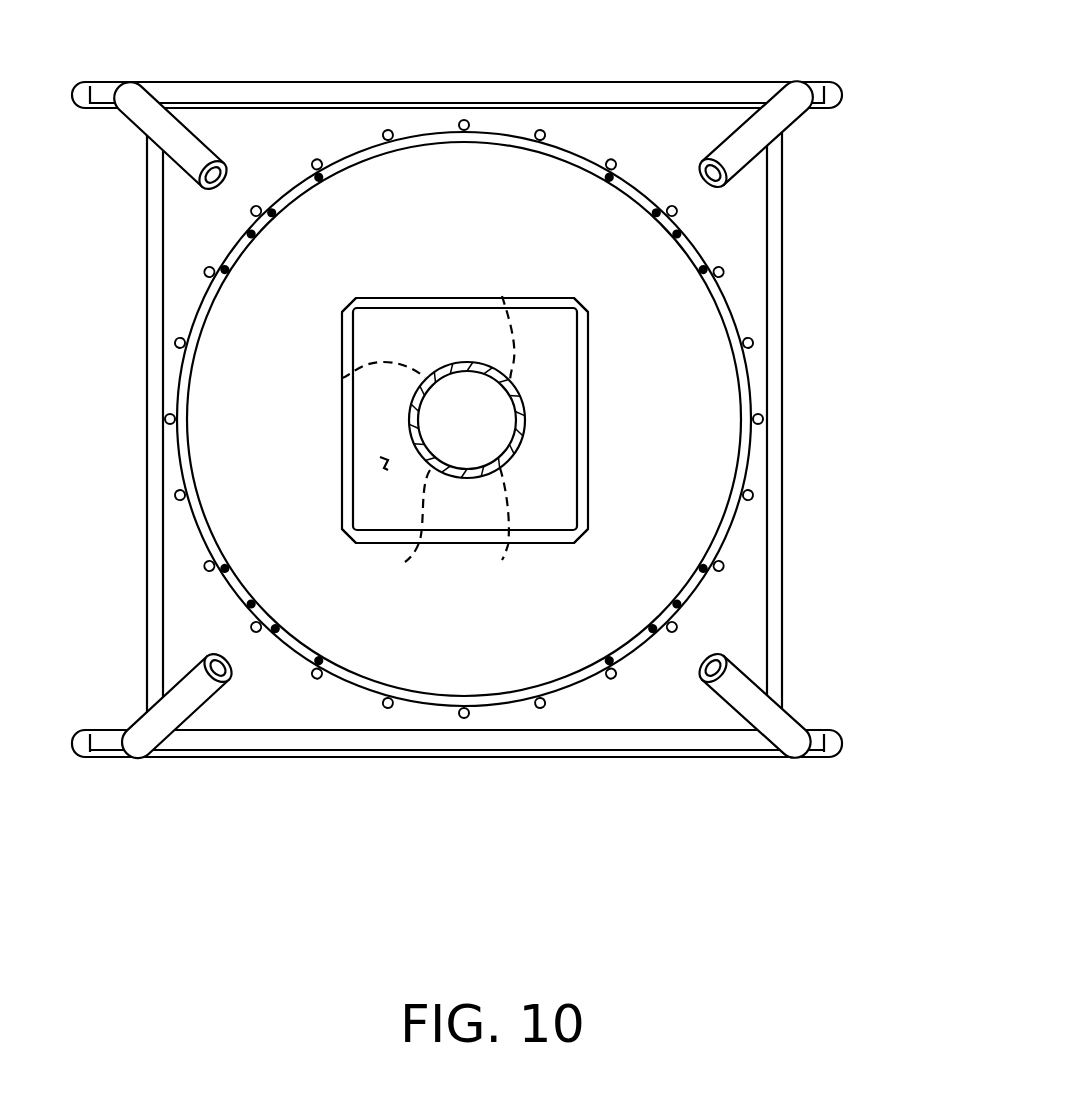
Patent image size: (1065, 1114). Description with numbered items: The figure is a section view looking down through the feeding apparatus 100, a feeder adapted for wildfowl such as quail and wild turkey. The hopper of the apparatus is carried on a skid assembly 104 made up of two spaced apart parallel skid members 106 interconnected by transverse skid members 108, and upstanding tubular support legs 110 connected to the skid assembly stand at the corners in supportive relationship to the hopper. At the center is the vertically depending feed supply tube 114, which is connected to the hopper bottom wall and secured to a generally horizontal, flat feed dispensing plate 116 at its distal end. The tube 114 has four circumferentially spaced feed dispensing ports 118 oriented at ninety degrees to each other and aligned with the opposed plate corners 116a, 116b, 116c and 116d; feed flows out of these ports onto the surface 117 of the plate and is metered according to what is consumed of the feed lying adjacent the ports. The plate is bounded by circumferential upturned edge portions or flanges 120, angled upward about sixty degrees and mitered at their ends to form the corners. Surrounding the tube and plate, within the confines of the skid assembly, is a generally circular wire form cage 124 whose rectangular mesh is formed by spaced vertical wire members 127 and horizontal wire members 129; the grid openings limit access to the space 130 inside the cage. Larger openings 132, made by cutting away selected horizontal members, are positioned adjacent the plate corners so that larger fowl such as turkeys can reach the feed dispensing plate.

The feeding apparatus 100 is at (826, 282).
The skid assembly 104 is at (660, 768).
The parallel skid members 106 is at (517, 80).
The transverse skid members 108 is at (147, 346).
The tubular support legs 110 is at (192, 133).
The feed supply tube 114 is at (522, 418).
The feed dispensing plate 116 is at (447, 296).
The plate corner 116a is at (352, 306).
The plate corner 116b is at (580, 307).
The plate corner 116c is at (580, 532).
The plate corner 116d is at (352, 540).
The surface of feed dispensing plate 117 is at (383, 467).
The feed dispensing ports 118 is at (503, 296).
The upturned edge portions or flanges 120 is at (398, 297).
The wire form cage 124 is at (190, 543).
The vertical wire members 127 is at (611, 166).
The horizontal wire members 129 is at (530, 740).
The space within cage 130 is at (690, 498).
The enlarged openings 132 is at (277, 207).